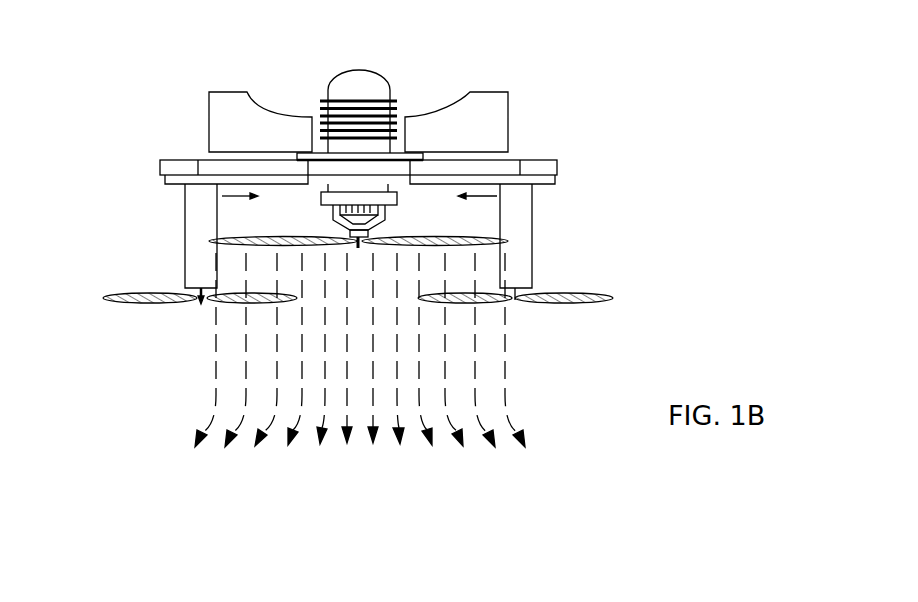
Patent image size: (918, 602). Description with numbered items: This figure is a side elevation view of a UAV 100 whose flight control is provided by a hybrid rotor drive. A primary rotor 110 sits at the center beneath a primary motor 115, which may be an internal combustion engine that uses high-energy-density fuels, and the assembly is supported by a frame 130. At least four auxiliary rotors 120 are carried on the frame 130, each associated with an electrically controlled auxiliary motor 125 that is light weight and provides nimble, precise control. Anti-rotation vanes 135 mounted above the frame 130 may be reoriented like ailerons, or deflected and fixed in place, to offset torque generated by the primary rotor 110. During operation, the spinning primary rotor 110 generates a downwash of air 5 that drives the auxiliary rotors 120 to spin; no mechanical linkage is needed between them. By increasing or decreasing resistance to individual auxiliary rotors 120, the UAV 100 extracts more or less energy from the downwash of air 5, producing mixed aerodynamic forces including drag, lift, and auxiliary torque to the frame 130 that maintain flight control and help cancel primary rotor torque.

The UAV 100 is at (608, 110).
The primary motor 115 is at (353, 70).
The anti-rotation vanes 135 is at (492, 92).
The frame 130 is at (192, 160).
The auxiliary motor 125 is at (187, 228).
The primary rotor 110 is at (390, 233).
The auxiliary rotors 120 is at (140, 292).
The downwash of air 5 is at (216, 407).